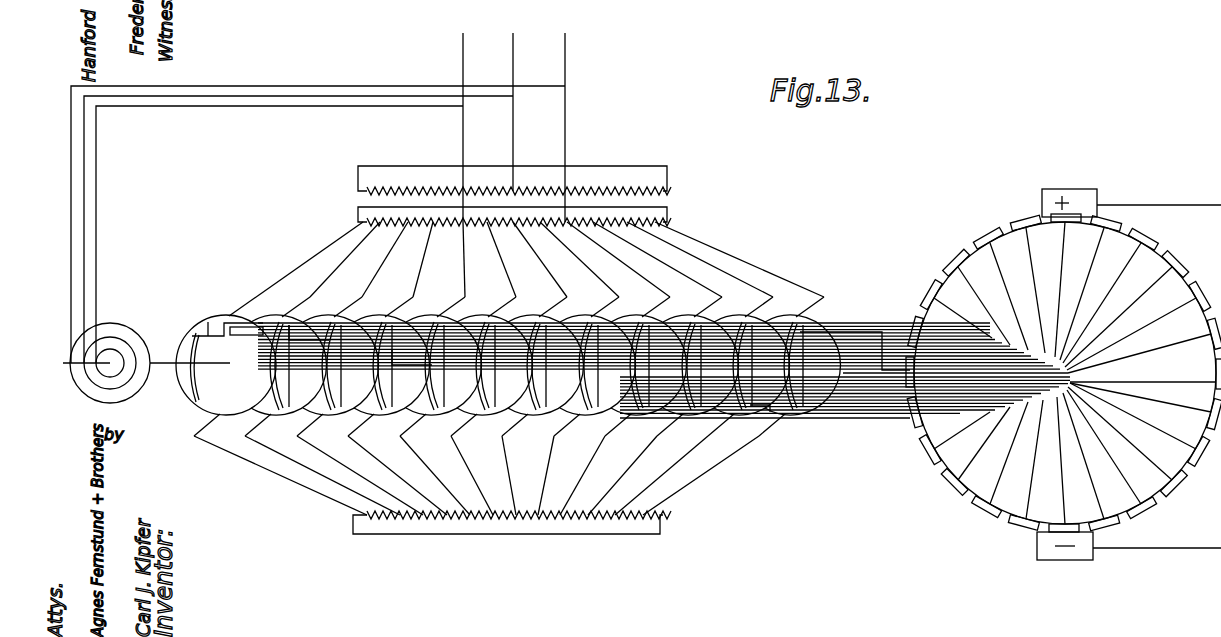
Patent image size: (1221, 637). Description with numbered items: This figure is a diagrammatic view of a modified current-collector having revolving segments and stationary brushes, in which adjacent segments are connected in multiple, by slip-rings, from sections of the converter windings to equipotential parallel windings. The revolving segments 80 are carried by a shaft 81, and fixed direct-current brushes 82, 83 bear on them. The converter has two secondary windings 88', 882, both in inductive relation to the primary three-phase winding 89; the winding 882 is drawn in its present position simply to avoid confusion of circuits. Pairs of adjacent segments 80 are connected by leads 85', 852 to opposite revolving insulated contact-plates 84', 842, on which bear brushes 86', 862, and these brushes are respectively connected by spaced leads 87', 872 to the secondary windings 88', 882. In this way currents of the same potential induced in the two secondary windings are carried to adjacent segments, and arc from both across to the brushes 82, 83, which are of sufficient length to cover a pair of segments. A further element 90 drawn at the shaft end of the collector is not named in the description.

The revolving segments 80 is at (1158, 258).
The shaft 81 is at (174, 367).
The direct-current brush 82 is at (1094, 192).
The direct-current brush 83 is at (1084, 560).
The revolving insulated contact-plate 84' is at (515, 361).
The revolving insulated contact-plate 842 is at (272, 386).
The lead 85' is at (633, 366).
The lead 852 is at (254, 336).
The brush 86' is at (532, 296).
The brush 862 is at (206, 424).
The spaced lead 87' is at (526, 269).
The spaced lead 872 is at (282, 475).
The secondary winding 88' is at (496, 215).
The secondary winding 882 is at (353, 528).
The primary three-phase winding 89 is at (358, 187).
The brush terminal 90 is at (124, 330).